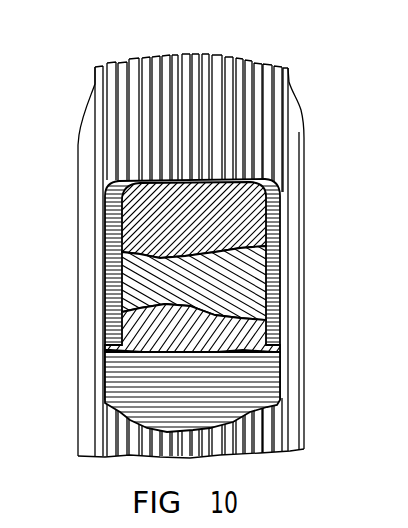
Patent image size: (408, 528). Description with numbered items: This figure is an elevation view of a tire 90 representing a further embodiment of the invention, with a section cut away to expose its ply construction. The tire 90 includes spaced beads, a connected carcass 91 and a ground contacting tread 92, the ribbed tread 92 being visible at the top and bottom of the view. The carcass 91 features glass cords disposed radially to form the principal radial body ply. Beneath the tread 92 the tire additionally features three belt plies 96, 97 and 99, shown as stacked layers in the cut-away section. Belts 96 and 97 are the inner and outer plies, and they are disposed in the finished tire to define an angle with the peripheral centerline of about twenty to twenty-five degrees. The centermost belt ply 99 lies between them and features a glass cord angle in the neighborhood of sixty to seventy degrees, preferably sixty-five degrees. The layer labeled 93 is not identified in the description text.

The tire 90 is at (340, 93).
The carcass 91 is at (282, 369).
The ground contacting tread 92 is at (155, 53).
The base layer 93 is at (118, 383).
The belt ply 96 is at (126, 322).
The belt ply 97 is at (148, 212).
The centermost belt ply 99 is at (140, 270).